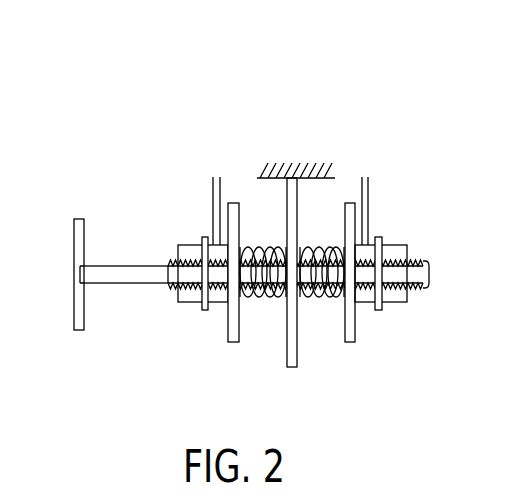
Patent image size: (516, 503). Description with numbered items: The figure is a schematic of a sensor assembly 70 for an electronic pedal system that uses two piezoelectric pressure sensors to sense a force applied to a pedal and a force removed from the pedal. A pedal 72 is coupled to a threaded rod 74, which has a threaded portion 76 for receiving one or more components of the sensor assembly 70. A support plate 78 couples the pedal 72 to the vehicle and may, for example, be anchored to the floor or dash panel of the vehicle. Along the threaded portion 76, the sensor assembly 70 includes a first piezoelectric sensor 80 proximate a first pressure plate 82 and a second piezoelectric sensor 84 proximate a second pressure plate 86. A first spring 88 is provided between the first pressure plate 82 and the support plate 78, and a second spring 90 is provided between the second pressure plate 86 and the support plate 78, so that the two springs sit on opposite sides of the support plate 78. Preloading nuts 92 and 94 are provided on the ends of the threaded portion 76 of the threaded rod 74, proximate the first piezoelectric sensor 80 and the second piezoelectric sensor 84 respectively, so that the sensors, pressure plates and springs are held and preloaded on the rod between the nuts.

The sensor assembly 70 is at (446, 87).
The pedal 72 is at (73, 228).
The threaded rod 74 is at (123, 284).
The threaded portion 76 is at (416, 257).
The support plate 78 is at (290, 368).
The first piezoelectric sensor 80 is at (218, 172).
The first pressure plate 82 is at (233, 343).
The second piezoelectric sensor 84 is at (368, 172).
The second pressure plate 86 is at (350, 343).
The first spring 88 is at (258, 244).
The second spring 90 is at (314, 244).
The preloading nut 92 is at (190, 303).
The preloading nut 94 is at (398, 303).